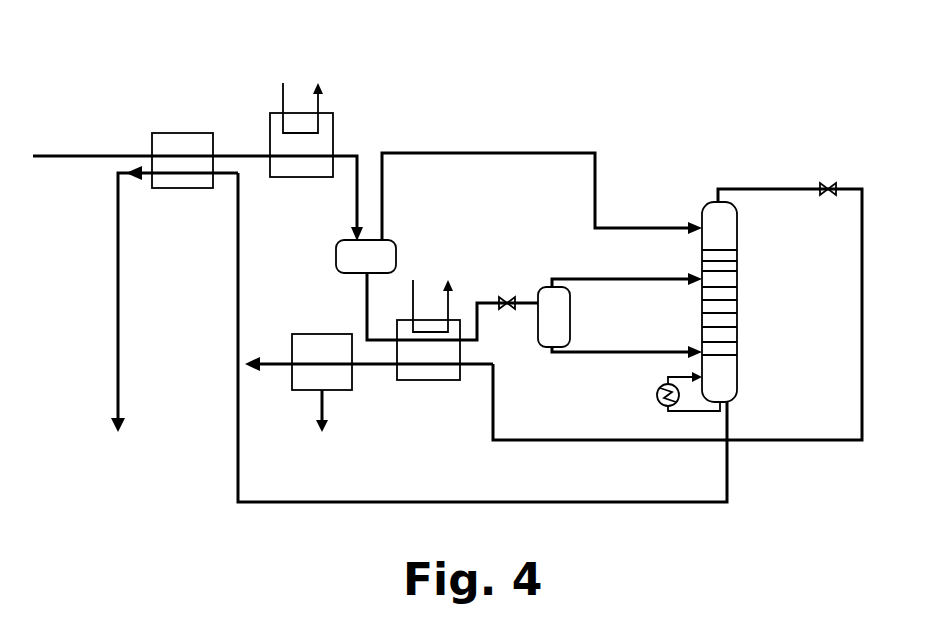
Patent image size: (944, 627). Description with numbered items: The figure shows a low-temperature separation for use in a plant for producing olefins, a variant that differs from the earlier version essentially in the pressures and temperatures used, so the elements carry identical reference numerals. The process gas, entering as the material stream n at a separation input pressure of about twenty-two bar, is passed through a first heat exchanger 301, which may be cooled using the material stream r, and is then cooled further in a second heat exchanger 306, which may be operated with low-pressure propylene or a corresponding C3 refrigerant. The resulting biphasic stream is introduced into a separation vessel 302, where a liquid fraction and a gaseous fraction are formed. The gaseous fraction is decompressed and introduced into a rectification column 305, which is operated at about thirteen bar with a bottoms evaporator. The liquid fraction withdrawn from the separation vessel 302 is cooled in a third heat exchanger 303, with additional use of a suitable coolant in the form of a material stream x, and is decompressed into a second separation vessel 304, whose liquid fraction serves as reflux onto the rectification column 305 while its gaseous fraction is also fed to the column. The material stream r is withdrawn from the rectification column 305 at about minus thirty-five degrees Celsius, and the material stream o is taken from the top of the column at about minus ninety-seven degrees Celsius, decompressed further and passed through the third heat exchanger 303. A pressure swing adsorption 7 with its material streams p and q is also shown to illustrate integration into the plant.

The first heat exchanger 301 is at (182, 133).
The second heat exchanger 306 is at (333, 139).
The separation vessel 302 is at (396, 255).
The second separation vessel 304 is at (540, 290).
The rectification column 305 is at (737, 293).
The third heat exchanger 303 is at (432, 382).
The pressure swing adsorption 7 is at (322, 334).
The material stream n is at (67, 158).
The material stream r is at (118, 292).
The material stream o is at (382, 366).
The material stream p is at (277, 365).
The material stream q is at (330, 405).
The stream x is at (416, 303).